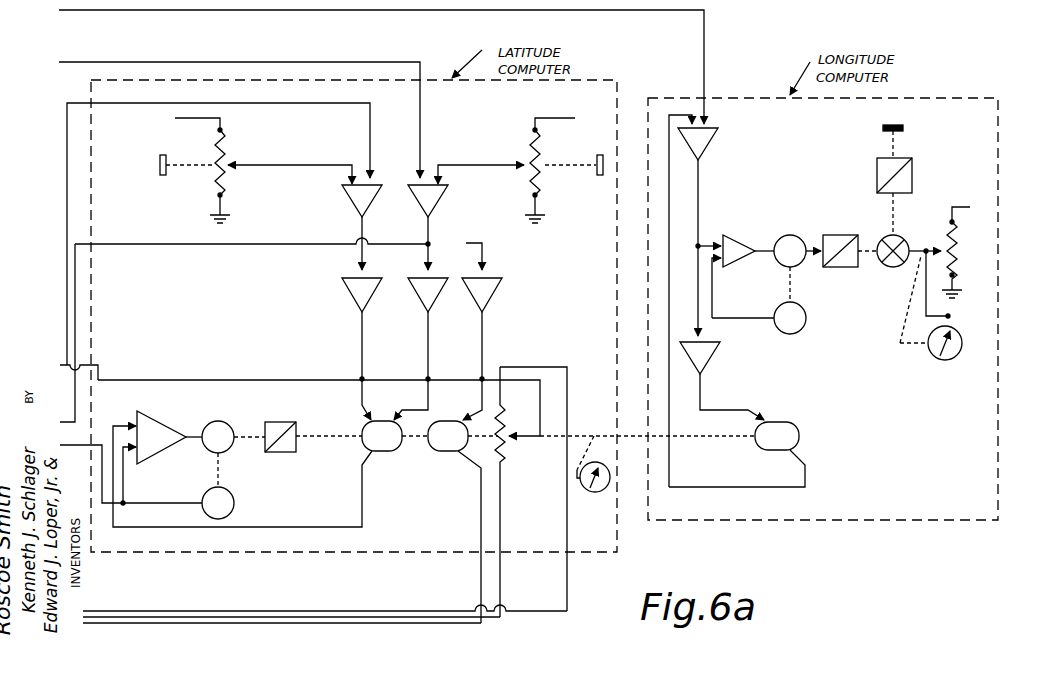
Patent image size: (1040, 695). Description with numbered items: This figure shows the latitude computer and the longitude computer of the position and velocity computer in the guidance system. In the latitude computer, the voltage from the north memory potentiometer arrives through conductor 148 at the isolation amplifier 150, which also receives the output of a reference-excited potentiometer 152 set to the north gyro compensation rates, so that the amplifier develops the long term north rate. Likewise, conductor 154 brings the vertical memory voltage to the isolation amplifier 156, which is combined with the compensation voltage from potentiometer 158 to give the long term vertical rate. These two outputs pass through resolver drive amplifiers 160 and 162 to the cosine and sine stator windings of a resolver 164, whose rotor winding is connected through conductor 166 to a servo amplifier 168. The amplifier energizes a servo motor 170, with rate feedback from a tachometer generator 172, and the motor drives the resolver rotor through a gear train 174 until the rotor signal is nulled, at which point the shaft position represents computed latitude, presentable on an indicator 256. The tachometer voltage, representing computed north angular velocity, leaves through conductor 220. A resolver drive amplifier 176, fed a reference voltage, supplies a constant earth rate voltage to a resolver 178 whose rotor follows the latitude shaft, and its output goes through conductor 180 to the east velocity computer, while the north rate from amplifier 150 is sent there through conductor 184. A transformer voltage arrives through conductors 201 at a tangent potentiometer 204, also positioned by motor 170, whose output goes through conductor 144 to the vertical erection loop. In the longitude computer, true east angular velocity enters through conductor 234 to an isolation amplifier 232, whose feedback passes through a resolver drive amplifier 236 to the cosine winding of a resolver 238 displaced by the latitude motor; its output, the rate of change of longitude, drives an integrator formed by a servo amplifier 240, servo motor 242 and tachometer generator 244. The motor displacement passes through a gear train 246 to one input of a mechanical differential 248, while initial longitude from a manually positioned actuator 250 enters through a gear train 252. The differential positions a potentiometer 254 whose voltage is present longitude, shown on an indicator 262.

The conductor 234 is at (66, 14).
The conductor 148 is at (92, 62).
The conductor 154 is at (370, 132).
The potentiometer 158 is at (224, 158).
The isolation amplifier 156 is at (349, 204).
The isolation amplifier 150 is at (441, 201).
The potentiometer 152 is at (542, 166).
The conductor 184 is at (137, 245).
The resolver drive amplifier 160 is at (346, 294).
The resolver drive amplifier 162 is at (415, 298).
The resolver drive amplifier 176 is at (489, 298).
The conductor 144 is at (145, 380).
The conductor 220 is at (80, 440).
The servo amplifier 168 is at (160, 415).
The servo motor 170 is at (223, 421).
The gear train 174 is at (290, 422).
The tachometer generator 172 is at (232, 492).
The resolver 164 is at (386, 452).
The conductor 166 is at (362, 500).
The resolver 178 is at (458, 420).
The tangent potentiometer 204 is at (502, 460).
The indicator 256 is at (595, 492).
The conductors 201 is at (135, 612).
The conductor 180 is at (167, 624).
The isolation amplifier 232 is at (711, 146).
The manually positioned actuator 250 is at (905, 129).
The gear train 252 is at (913, 172).
The servo amplifier 240 is at (766, 212).
The servo motor 242 is at (812, 212).
The gear train 246 is at (843, 235).
The tachometer generator 244 is at (806, 311).
The mechanical differential 248 is at (885, 263).
The potentiometer 254 is at (952, 266).
The resolver drive amplifier 236 is at (715, 356).
The resolver 238 is at (786, 421).
The indicator 262 is at (945, 361).